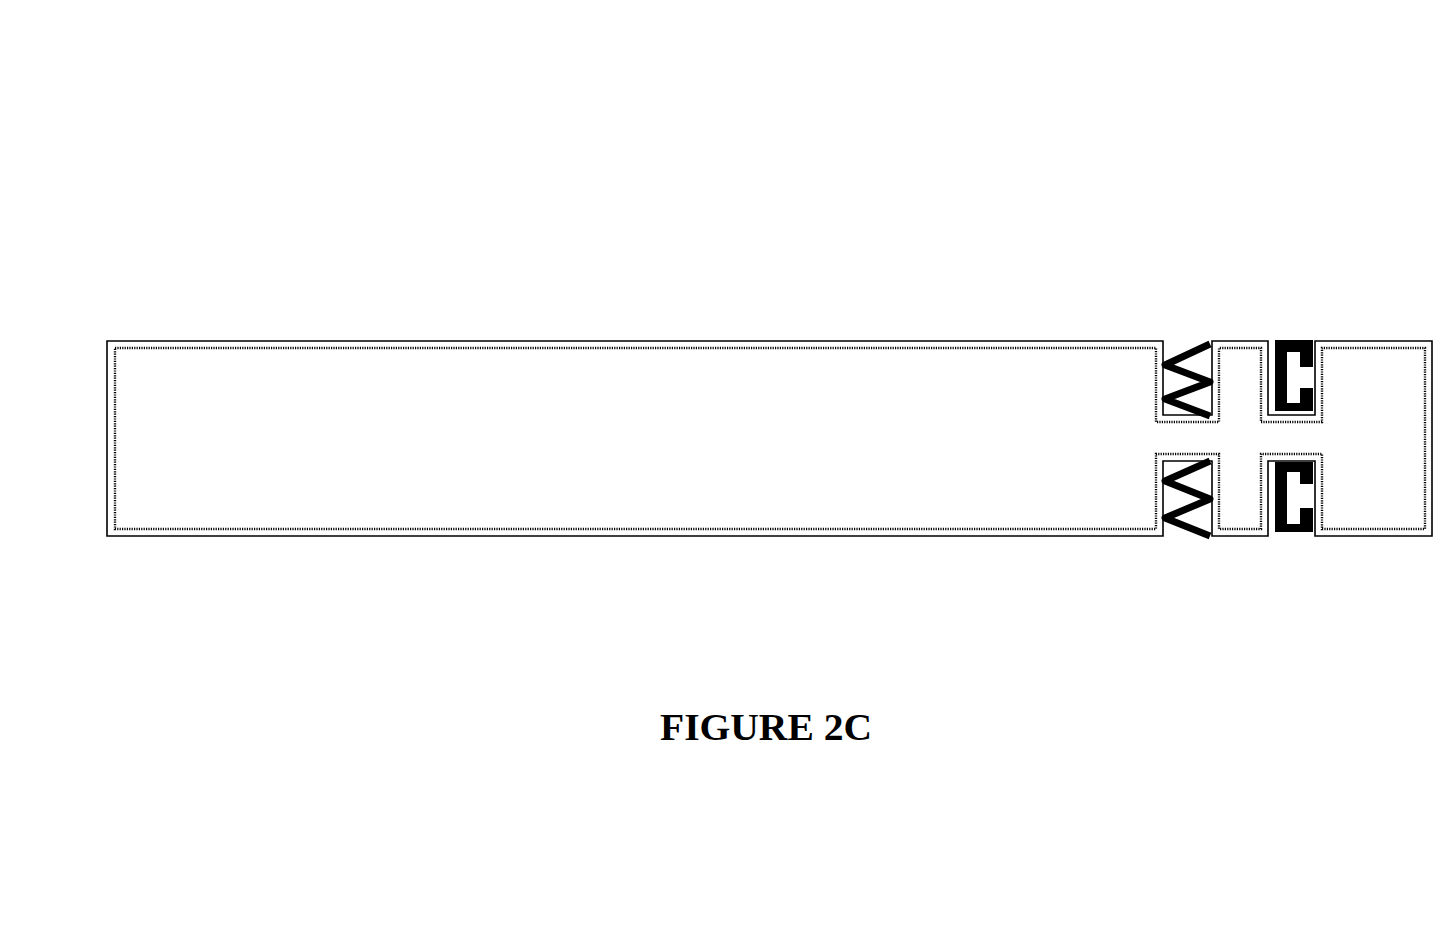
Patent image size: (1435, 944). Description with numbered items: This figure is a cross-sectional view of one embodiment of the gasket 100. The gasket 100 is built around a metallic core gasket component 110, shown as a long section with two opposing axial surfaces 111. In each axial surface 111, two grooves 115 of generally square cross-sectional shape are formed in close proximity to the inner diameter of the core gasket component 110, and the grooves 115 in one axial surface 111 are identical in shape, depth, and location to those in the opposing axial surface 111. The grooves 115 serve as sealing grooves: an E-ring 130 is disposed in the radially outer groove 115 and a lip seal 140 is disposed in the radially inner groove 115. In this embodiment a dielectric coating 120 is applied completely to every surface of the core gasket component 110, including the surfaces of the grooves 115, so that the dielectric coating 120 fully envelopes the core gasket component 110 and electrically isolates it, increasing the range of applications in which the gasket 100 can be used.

The gasket 100 is at (779, 66).
The core gasket component 110 is at (588, 422).
The axial surface 111 is at (438, 347).
The groove 115 is at (1185, 552).
The dielectric coating 120 is at (318, 341).
The E-ring 130 is at (1188, 350).
The lip seal 140 is at (1293, 343).